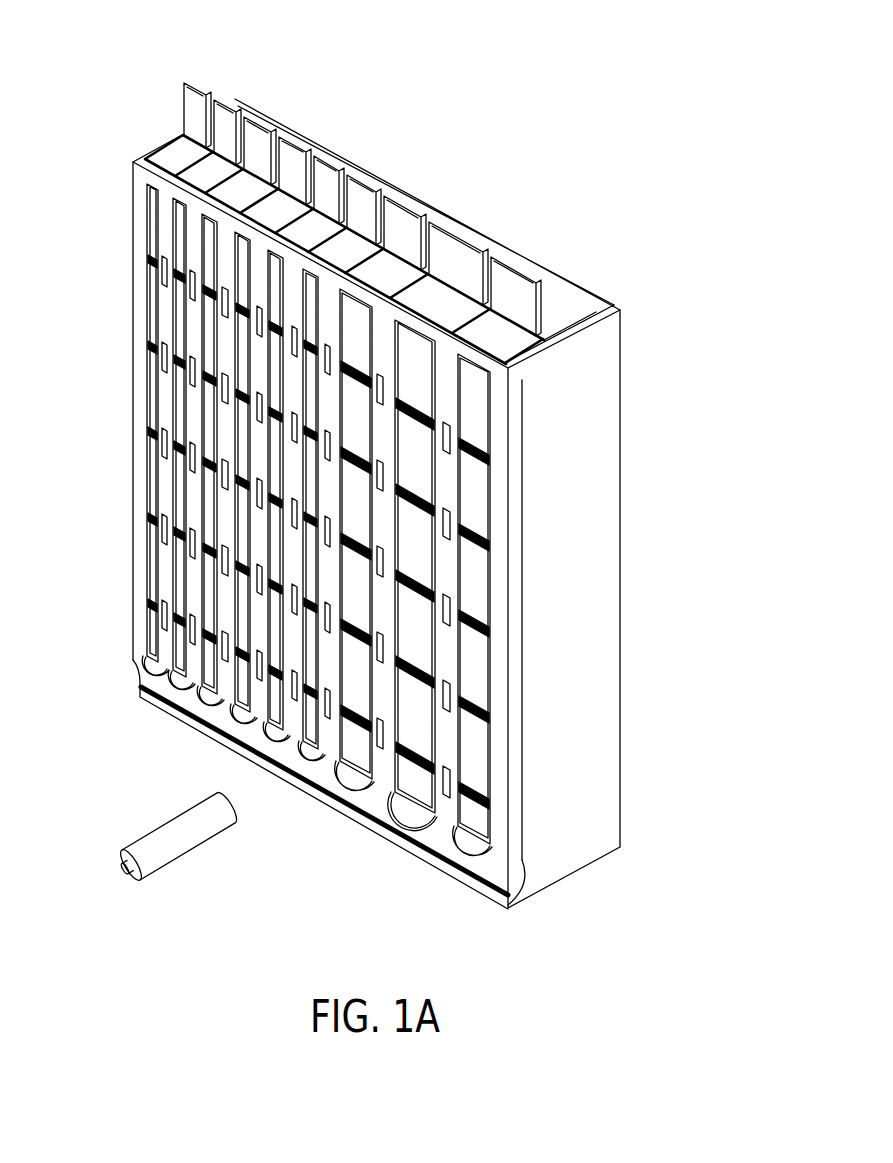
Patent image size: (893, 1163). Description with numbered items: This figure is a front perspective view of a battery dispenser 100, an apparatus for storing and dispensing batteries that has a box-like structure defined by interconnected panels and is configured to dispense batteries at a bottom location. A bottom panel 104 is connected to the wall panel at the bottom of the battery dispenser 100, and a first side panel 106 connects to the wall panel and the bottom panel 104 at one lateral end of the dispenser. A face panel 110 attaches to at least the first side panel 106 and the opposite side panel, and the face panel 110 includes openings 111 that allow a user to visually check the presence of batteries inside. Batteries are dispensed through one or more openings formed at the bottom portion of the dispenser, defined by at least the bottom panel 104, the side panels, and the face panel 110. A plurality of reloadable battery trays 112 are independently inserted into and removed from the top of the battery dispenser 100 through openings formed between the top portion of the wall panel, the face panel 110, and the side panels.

The battery dispenser 100 is at (701, 348).
The bottom panel 104 is at (478, 887).
The first side panel 106 is at (597, 688).
The face panel 110 is at (133, 347).
The openings 111 is at (478, 578).
The reloadable battery trays 112 is at (218, 33).